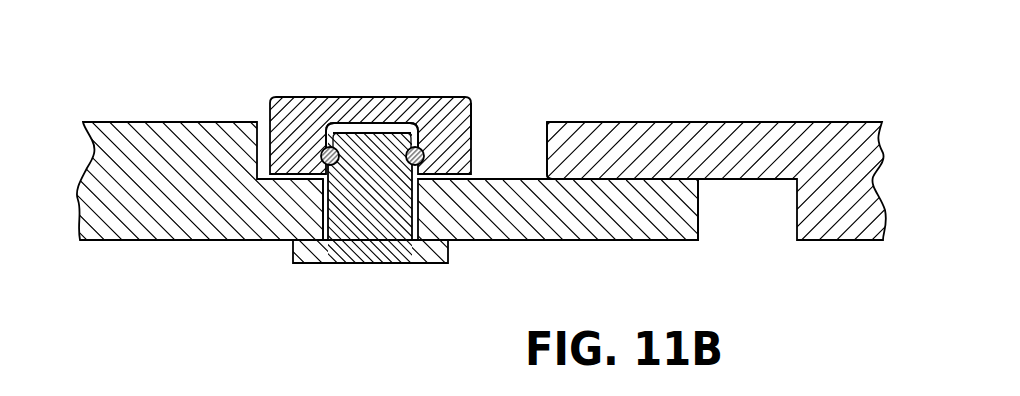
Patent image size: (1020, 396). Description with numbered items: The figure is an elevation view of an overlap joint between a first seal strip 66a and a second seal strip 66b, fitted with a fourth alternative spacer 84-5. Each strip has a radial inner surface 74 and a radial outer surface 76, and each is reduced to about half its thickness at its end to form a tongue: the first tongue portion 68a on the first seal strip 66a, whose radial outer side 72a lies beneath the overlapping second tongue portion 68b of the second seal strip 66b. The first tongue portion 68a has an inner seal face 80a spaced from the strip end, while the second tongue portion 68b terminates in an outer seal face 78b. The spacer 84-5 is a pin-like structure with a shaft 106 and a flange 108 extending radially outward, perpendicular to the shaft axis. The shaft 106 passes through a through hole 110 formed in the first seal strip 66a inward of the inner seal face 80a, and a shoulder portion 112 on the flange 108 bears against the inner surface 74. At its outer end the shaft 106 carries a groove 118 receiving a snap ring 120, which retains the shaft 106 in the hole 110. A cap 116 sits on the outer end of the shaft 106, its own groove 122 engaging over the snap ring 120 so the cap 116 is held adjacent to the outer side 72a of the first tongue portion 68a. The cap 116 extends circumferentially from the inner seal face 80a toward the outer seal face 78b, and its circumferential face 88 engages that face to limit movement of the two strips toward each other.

The first seal strip 66a is at (130, 120).
The second seal strip 66b is at (819, 119).
The outer surface of seal strip 76 is at (178, 122).
The inner surface of seal strip 74 is at (140, 241).
The cap 116 is at (322, 107).
The groove 118 is at (350, 124).
The snap ring 120 is at (322, 149).
The groove 122 is at (419, 146).
The spacer 84-5 is at (469, 85).
The radial outer side of first tongue portion 72a is at (524, 179).
The outer seal face of second tongue portion 78b is at (538, 150).
The second tongue portion 68b is at (657, 143).
The first tongue portion 68a is at (660, 217).
The inner seal face of first tongue portion 80a is at (438, 178).
The circumferential face 88 is at (472, 146).
The shaft 106 is at (325, 193).
The shoulder portion 112 is at (312, 240).
The through hole 110 is at (330, 212).
The flange 108 is at (432, 258).